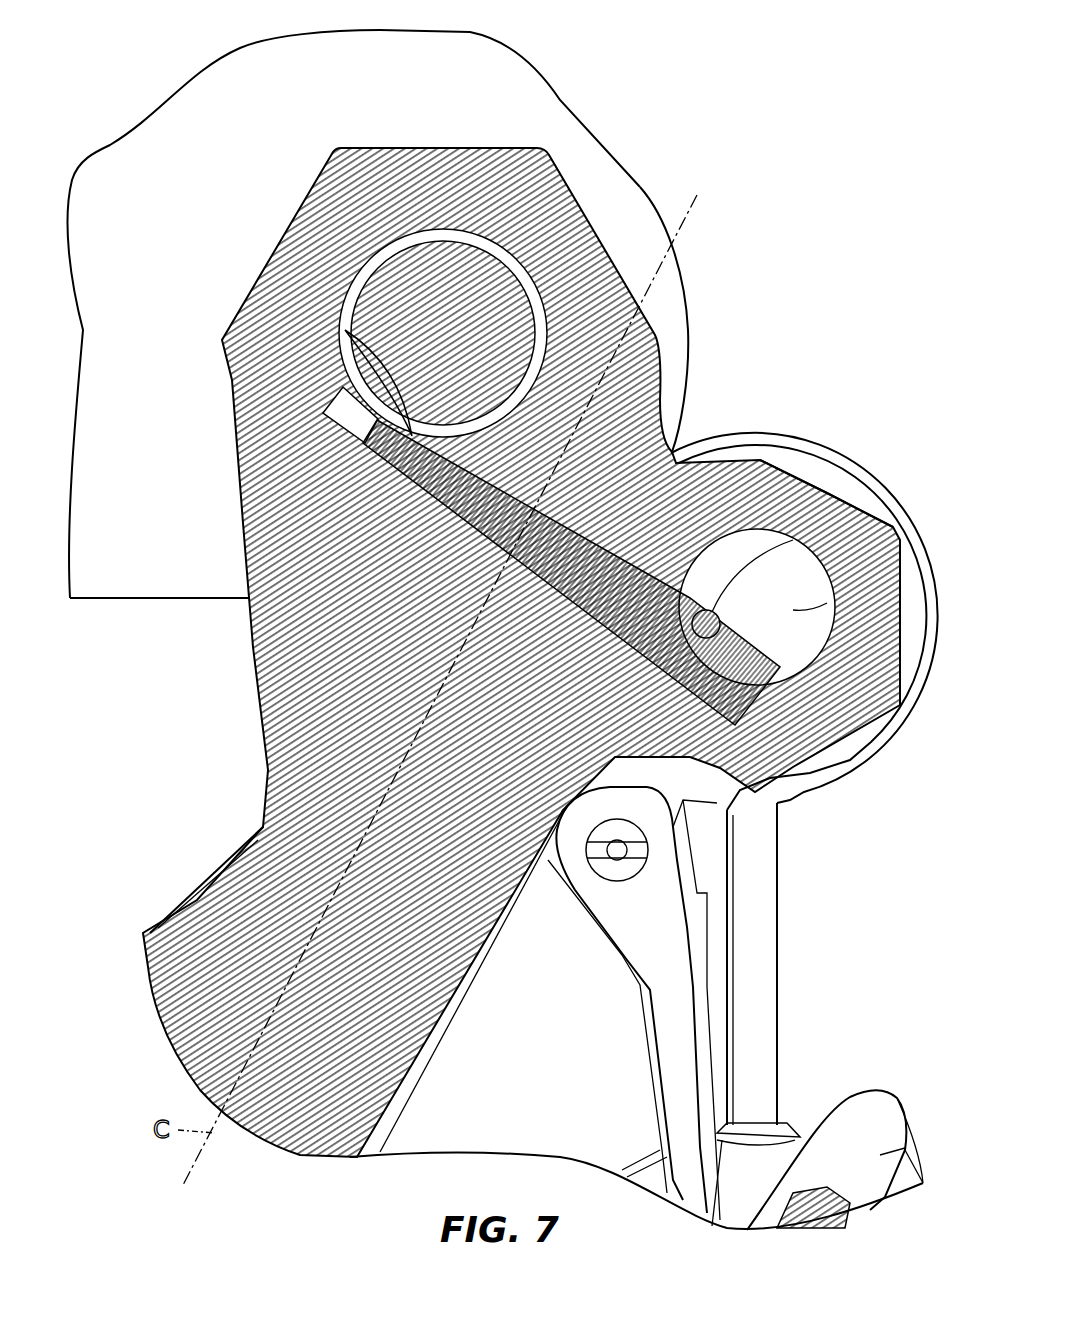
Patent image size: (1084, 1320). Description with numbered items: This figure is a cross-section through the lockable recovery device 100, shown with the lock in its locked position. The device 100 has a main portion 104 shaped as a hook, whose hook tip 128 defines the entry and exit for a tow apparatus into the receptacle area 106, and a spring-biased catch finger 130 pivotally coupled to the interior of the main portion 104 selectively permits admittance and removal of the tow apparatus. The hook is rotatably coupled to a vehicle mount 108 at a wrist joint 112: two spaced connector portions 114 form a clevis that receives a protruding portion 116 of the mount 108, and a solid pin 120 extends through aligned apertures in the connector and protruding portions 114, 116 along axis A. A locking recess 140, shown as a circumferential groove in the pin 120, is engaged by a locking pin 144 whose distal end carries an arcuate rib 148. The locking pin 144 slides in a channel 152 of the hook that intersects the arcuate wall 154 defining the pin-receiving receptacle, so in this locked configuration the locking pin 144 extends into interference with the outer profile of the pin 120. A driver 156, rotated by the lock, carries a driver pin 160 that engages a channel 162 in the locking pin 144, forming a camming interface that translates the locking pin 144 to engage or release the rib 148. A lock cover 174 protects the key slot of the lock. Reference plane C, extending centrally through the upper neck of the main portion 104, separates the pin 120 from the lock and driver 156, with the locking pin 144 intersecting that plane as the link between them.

The lockable recovery device 100 is at (795, 262).
The main portion 104 is at (190, 920).
The receptacle area 106 is at (483, 1033).
The vehicle mount 108 is at (95, 177).
The wrist joint 112 is at (415, 229).
The connector portions 114 is at (505, 135).
The protruding portion 116 is at (620, 193).
The pin 120 is at (402, 298).
The hook tip 128 is at (855, 1110).
The spring-biased catch finger 130 is at (673, 1087).
The locking recess 140 is at (330, 427).
The locking pin 144 is at (450, 500).
The arcuate rib 148 is at (345, 333).
The channel 152 is at (833, 705).
The wall 154 is at (517, 403).
The driver 156 is at (895, 527).
The driver pin 160 is at (805, 555).
The channel 162 is at (700, 616).
The lock cover 174 is at (757, 917).